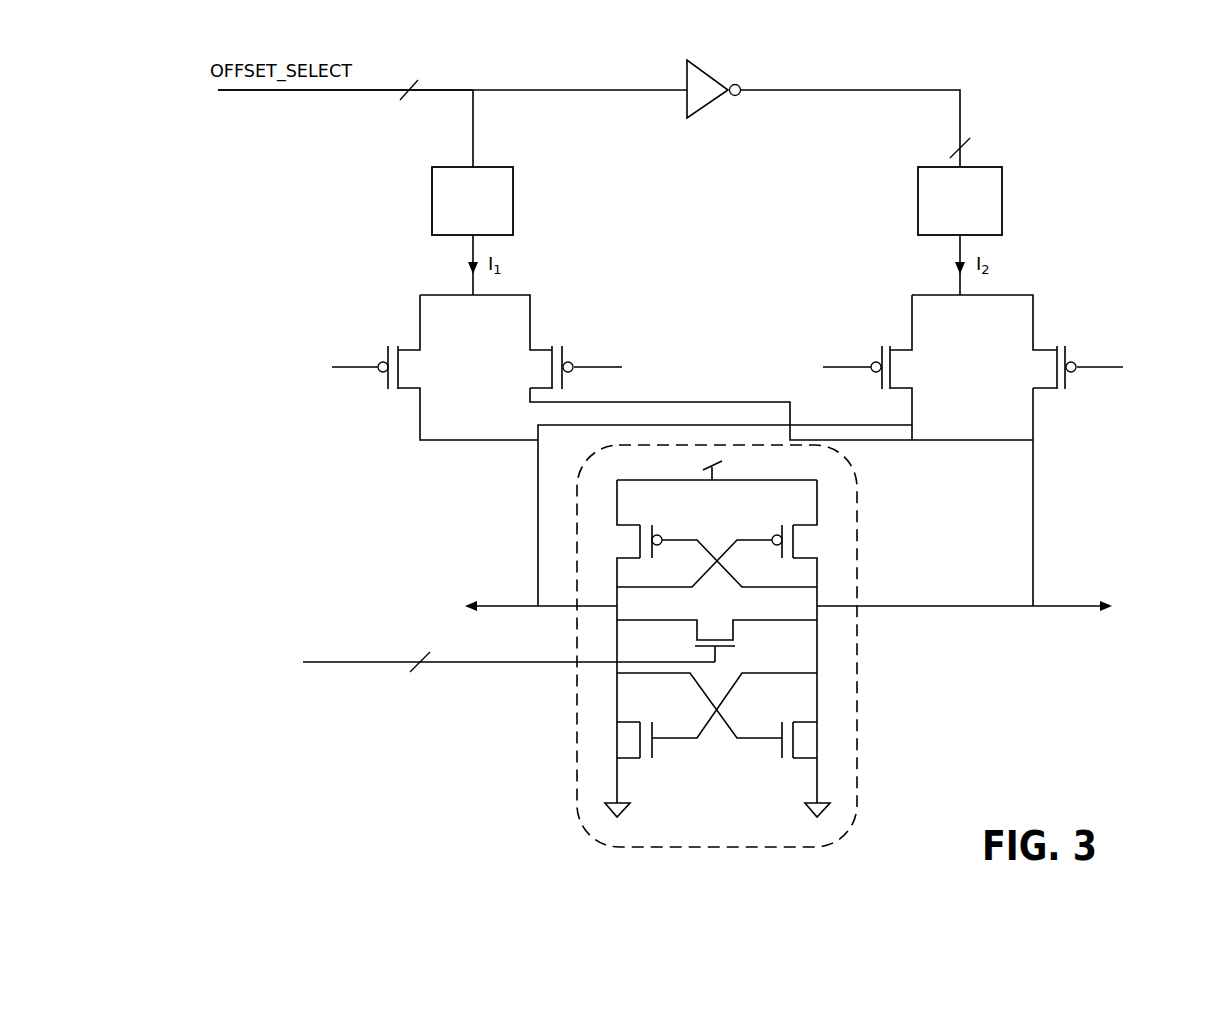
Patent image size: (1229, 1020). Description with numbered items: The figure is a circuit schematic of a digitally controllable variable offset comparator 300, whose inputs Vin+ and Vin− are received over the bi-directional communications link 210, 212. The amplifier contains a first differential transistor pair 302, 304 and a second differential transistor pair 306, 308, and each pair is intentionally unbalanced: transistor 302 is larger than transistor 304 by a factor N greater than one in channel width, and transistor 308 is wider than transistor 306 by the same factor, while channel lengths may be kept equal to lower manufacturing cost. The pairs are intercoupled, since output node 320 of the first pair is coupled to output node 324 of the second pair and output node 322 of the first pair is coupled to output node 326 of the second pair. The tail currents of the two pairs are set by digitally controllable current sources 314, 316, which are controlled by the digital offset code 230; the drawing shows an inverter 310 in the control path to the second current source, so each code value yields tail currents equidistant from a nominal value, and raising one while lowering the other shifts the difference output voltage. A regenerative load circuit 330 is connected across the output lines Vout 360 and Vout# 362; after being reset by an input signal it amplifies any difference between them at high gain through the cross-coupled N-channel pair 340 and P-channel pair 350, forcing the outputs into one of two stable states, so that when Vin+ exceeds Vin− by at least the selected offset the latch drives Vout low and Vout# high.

The variable offset comparator 300 is at (261, 835).
The offset code 230 is at (345, 78).
The inverter 310 is at (714, 80).
The digitally controllable current source 314 is at (514, 176).
The digitally controllable current source 316 is at (1003, 176).
The bi-directional communications link 210 is at (340, 352).
The bi-directional communications link 212 is at (668, 340).
The transistor of first differential pair 302 is at (438, 385).
The transistor of first differential pair 304 is at (520, 385).
The transistor of second differential pair 306 is at (925, 385).
The transistor of second differential pair 308 is at (1018, 385).
The output node of first pair 320 is at (420, 440).
The output node of first pair 322 is at (712, 400).
The output node of second pair 324 is at (920, 428).
The output node of second pair 326 is at (1037, 415).
The regenerative load circuit 330 is at (752, 646).
The cross-coupled N-channel pair 340 is at (760, 758).
The P-channel pair 350 is at (776, 518).
The output Vout 360 is at (1068, 604).
The complementary output Vout# 362 is at (480, 604).